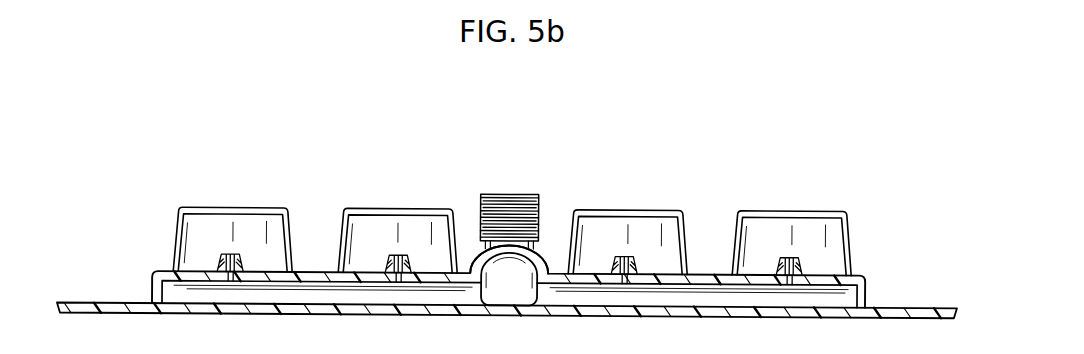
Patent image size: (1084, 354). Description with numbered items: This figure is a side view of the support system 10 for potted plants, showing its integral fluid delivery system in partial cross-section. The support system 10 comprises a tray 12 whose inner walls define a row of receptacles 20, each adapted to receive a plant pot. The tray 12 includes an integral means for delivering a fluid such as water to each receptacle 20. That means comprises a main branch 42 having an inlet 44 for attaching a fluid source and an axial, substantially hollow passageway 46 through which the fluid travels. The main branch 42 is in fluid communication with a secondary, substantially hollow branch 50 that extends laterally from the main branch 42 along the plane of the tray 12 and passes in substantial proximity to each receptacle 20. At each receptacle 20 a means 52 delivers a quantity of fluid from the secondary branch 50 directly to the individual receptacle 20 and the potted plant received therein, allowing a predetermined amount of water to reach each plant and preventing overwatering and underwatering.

The support system 10 is at (644, 138).
The tray 12 is at (105, 301).
The receptacle 20 is at (183, 202).
The main branch 42 is at (541, 247).
The inlet 44 is at (517, 190).
The passageway 46 is at (519, 288).
The secondary branch 50 is at (850, 293).
The means for delivering a quantity of fluid 52 is at (242, 259).